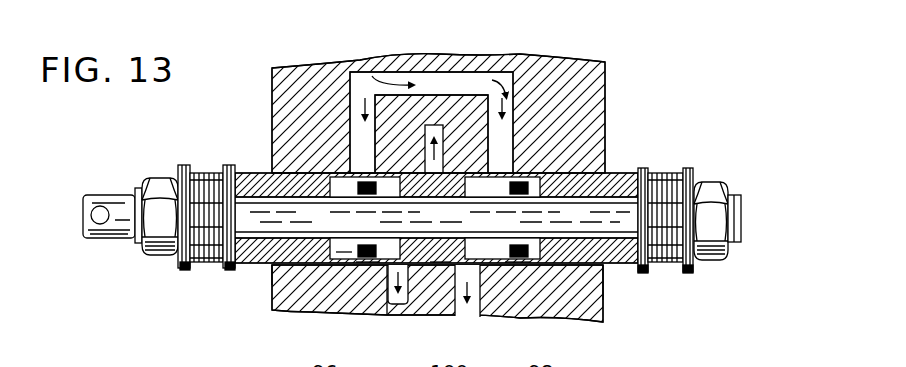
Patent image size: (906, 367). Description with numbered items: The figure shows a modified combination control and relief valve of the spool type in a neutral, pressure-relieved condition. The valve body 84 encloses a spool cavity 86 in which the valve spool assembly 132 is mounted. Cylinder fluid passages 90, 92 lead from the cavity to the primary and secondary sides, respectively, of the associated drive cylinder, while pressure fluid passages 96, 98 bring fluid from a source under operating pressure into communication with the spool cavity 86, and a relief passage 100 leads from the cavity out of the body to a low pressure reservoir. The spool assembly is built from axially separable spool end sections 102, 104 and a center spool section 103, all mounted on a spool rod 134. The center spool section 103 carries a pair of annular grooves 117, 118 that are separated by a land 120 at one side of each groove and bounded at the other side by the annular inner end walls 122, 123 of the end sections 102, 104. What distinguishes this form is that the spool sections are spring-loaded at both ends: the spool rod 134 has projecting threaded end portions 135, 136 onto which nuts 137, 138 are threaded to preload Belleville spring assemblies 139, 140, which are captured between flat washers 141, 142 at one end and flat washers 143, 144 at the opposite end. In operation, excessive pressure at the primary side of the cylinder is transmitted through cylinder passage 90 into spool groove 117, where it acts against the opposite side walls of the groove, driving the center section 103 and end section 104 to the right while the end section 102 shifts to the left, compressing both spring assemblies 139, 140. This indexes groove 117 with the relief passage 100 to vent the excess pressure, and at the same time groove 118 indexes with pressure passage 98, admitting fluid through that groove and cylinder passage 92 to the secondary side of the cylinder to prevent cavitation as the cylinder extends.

The valve body 84 is at (605, 70).
The spool cavity 86 is at (612, 173).
The cylinder fluid passage 90 is at (392, 300).
The cylinder fluid passage 92 is at (468, 312).
The pressure fluid passage 96 is at (358, 86).
The pressure fluid passage 98 is at (526, 74).
The relief passage 100 is at (437, 128).
The spool end section 102 is at (276, 268).
The center spool section 103 is at (345, 250).
The spool end section 104 is at (598, 280).
The annular groove 117 is at (420, 264).
The annular groove 118 is at (486, 264).
The land 120 is at (440, 263).
The annular inner end wall 122 is at (382, 263).
The annular inner end wall 123 is at (514, 263).
The valve spool assembly 132 is at (243, 170).
The spool rod 134 is at (284, 173).
The threaded end portion 135 is at (108, 196).
The threaded end portion 136 is at (744, 204).
The nut 137 is at (160, 178).
The nut 138 is at (712, 182).
The Belleville spring assembly 139 is at (205, 174).
The Belleville spring assembly 140 is at (667, 174).
The flat washer 141 is at (183, 270).
The flat washer 142 is at (231, 270).
The flat washer 143 is at (644, 273).
The flat washer 144 is at (692, 273).